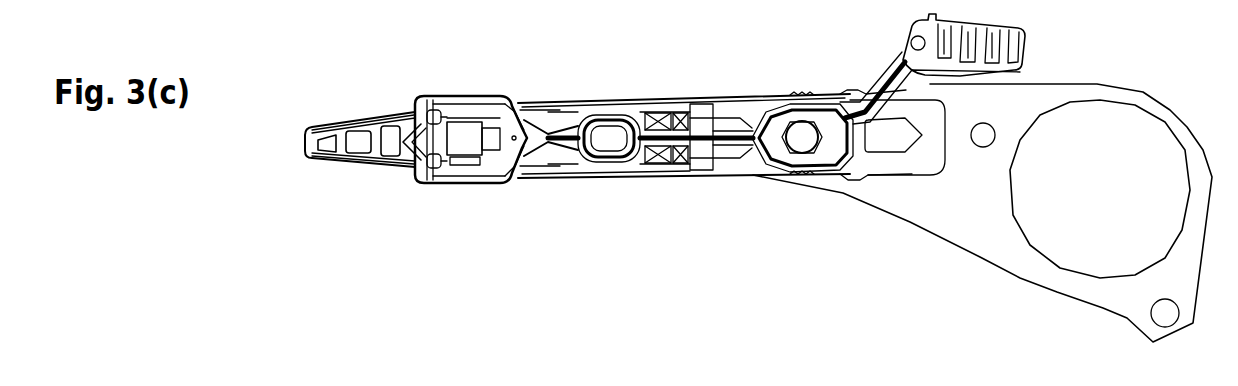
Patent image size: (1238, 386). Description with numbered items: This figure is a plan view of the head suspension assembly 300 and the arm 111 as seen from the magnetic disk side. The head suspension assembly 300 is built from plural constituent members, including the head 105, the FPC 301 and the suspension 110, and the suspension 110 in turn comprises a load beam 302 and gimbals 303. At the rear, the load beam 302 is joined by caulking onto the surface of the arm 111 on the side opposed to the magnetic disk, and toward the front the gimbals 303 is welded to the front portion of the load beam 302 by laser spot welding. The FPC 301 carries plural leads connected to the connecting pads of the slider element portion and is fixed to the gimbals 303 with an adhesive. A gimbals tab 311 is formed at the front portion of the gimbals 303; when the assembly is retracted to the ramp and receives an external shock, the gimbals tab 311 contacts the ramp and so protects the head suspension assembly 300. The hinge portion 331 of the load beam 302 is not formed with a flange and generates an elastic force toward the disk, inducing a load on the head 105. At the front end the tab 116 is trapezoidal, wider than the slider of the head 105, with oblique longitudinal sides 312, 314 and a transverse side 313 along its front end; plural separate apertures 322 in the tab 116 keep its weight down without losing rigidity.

The head suspension assembly 300 is at (658, 230).
The suspension 110 is at (542, 84).
The arm 111 is at (925, 212).
The tab 116 is at (305, 152).
The head 105 is at (455, 148).
The FPC (flexible printed circuit) 301 is at (893, 72).
The load beam 302 is at (612, 95).
The gimbals 303 is at (500, 183).
The gimbals tab 311 is at (412, 127).
The side 312 is at (312, 167).
The side 313 is at (302, 143).
The side 314 is at (335, 122).
The apertures 322 is at (358, 152).
The hinge portion 331 is at (740, 163).